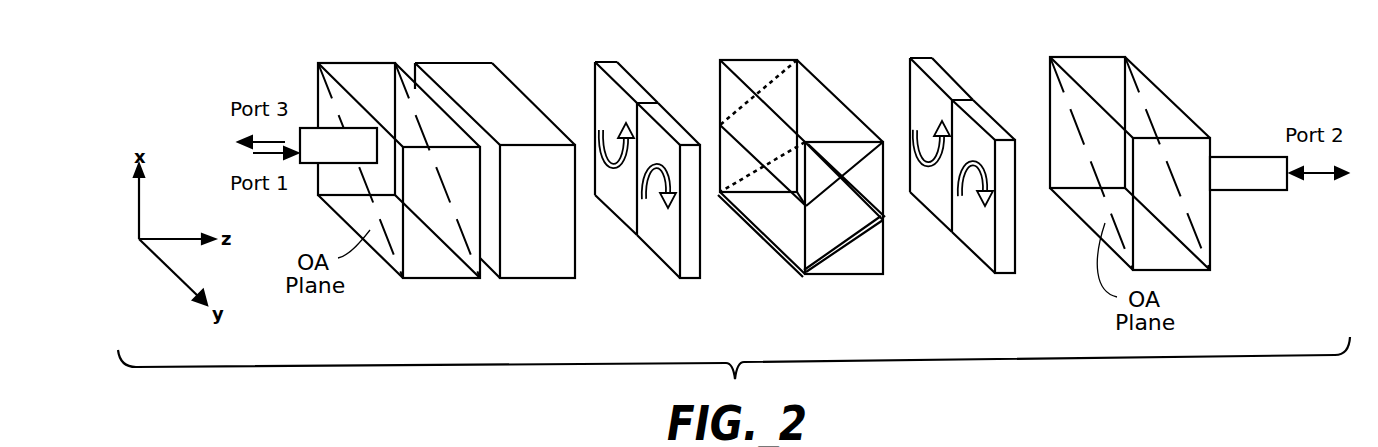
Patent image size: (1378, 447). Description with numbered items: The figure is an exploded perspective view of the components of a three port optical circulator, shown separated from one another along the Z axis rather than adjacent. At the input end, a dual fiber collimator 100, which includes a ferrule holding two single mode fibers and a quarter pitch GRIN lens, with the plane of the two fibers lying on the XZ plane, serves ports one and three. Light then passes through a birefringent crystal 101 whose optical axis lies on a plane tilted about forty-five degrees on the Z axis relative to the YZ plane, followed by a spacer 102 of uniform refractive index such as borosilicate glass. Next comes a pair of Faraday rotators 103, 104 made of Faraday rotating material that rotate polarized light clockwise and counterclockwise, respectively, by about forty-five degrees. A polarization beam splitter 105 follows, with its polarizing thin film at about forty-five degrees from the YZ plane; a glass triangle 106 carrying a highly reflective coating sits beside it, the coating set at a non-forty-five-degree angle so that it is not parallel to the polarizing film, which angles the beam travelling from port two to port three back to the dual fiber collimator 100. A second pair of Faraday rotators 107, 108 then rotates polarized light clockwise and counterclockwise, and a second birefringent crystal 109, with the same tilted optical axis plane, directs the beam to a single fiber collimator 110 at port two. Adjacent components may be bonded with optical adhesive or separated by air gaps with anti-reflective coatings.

The dual fiber collimator 100 is at (312, 116).
The birefringent crystal 101 is at (357, 62).
The spacer 102 is at (473, 63).
The Faraday rotator 103 is at (605, 62).
The Faraday rotator 104 is at (693, 278).
The polarization beam splitter 105 is at (760, 60).
The glass triangle 106 is at (843, 252).
The Faraday rotator 107 is at (922, 57).
The Faraday rotator 108 is at (1010, 273).
The birefringent crystal 109 is at (1088, 53).
The single fiber collimator 110 is at (1248, 157).